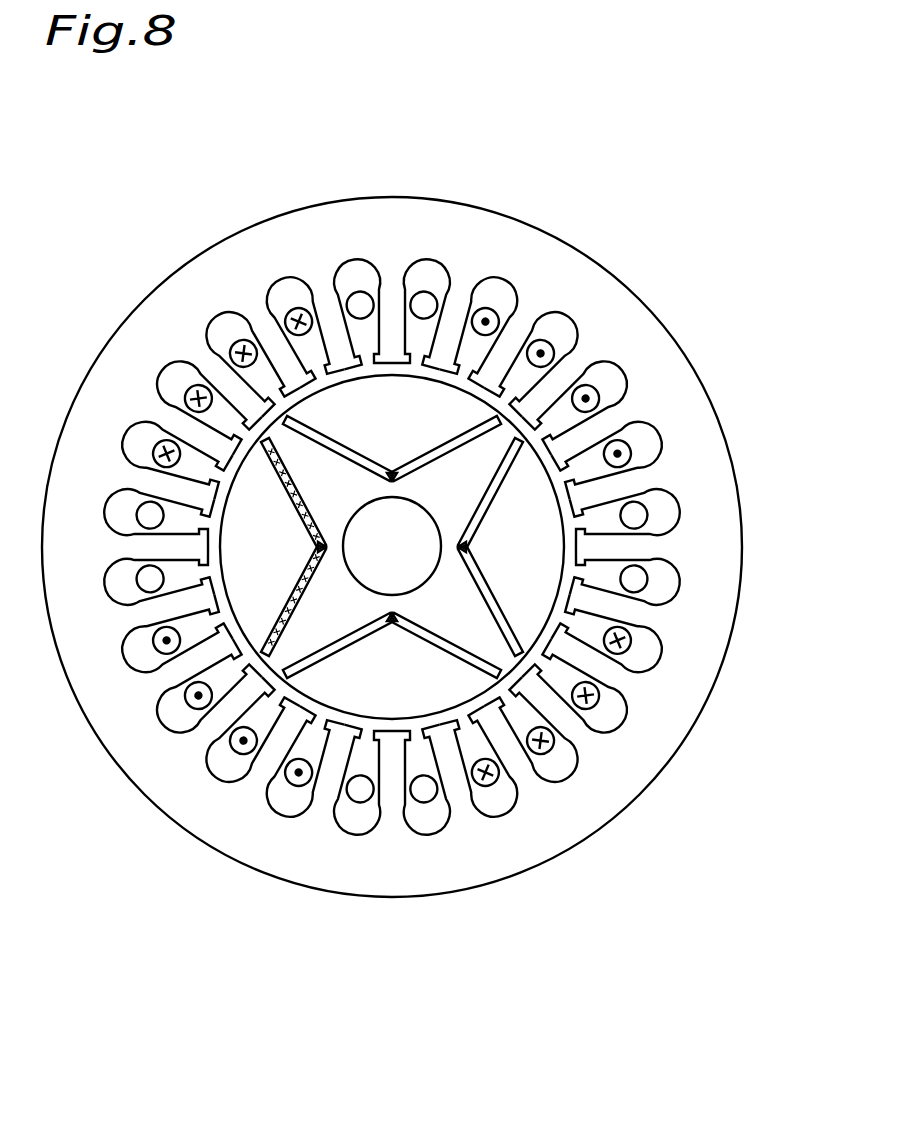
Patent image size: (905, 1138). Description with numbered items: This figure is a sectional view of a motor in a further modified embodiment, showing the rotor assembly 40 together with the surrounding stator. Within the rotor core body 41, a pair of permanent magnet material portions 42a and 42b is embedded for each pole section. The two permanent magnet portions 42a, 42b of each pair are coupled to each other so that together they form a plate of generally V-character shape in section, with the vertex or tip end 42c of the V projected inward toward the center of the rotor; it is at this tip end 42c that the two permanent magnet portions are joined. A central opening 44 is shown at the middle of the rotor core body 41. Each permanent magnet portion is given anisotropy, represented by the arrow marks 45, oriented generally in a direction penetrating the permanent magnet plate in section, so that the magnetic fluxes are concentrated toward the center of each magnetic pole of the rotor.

The rotor 40 is at (463, 585).
The rotor core body 41 is at (535, 518).
The permanent magnet material portion 42a is at (518, 436).
The permanent magnet material portion 42b is at (512, 652).
The vertex or tip end 42c is at (317, 542).
The shaft hole 44 is at (377, 578).
The arrow marks 45 is at (268, 650).